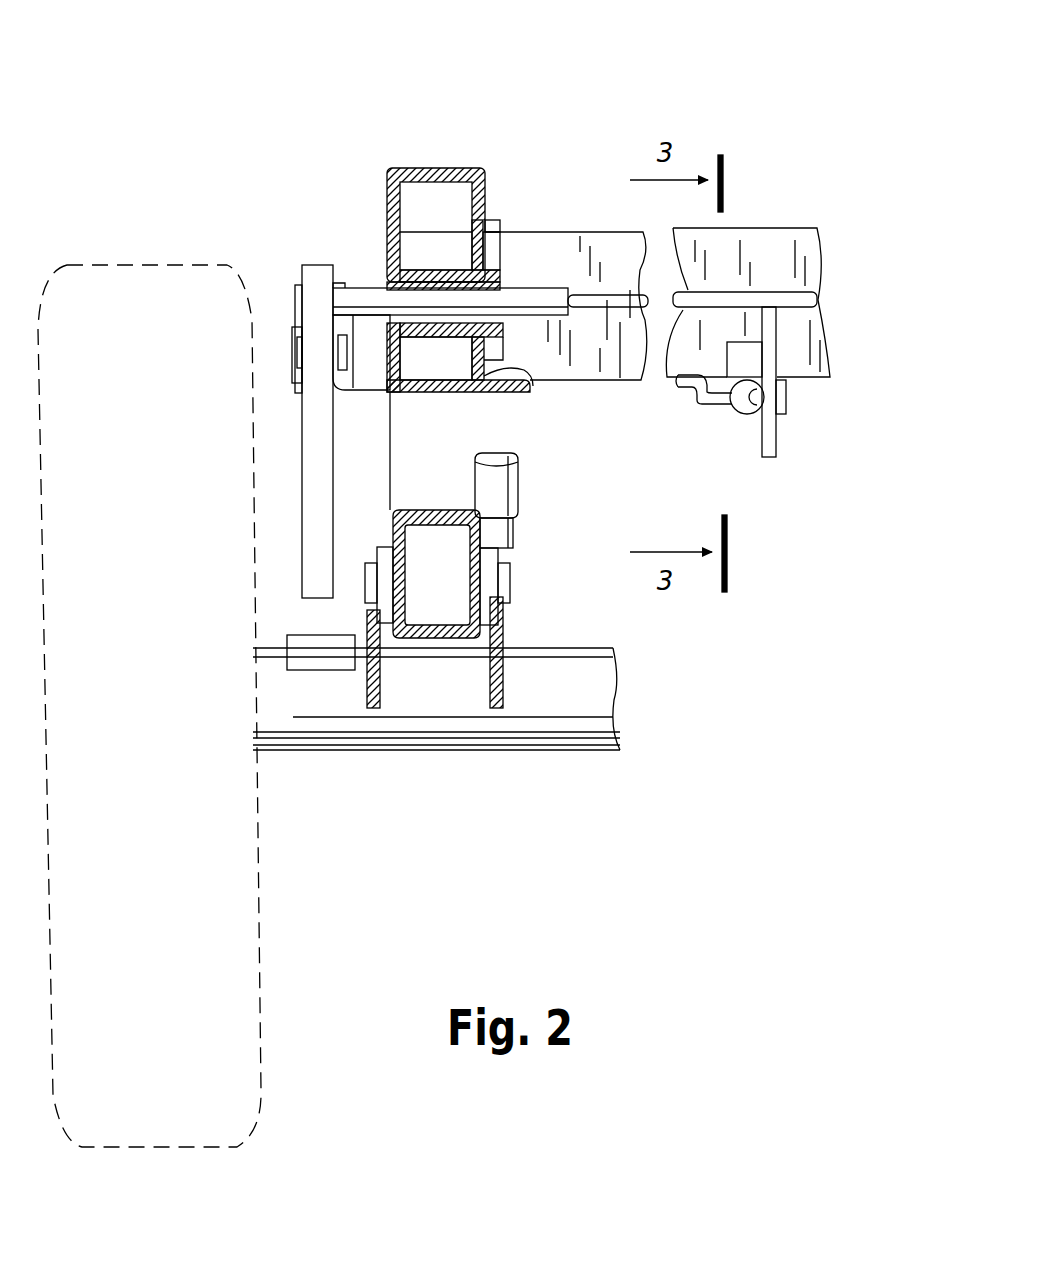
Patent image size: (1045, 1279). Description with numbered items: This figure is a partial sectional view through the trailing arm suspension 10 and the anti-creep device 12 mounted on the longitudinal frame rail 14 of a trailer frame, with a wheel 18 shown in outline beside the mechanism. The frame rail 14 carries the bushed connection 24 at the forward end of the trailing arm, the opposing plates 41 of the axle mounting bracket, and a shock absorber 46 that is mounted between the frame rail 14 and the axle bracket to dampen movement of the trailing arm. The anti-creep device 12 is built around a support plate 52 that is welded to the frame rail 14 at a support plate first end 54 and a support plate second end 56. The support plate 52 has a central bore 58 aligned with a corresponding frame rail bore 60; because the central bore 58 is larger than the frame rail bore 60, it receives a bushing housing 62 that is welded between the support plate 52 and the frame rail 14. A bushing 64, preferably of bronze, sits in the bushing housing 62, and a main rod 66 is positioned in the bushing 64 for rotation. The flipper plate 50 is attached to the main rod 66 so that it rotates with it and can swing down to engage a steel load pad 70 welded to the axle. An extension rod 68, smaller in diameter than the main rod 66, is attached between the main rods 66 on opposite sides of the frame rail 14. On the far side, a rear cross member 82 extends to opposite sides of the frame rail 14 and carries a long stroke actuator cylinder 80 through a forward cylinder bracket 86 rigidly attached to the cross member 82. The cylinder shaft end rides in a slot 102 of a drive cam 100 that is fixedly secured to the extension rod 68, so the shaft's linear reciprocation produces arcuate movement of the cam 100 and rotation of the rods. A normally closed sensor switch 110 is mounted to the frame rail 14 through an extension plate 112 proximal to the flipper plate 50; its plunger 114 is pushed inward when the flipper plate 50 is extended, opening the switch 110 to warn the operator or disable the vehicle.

The trailing arm suspension 10 is at (616, 88).
The anti-creep device 12 is at (308, 221).
The frame rail 14 is at (482, 170).
The wheels 18 is at (140, 262).
The bushed connection 24 is at (482, 588).
The opposing plates 41 is at (512, 628).
The shock absorber 46 is at (504, 492).
The flipper plate 50 is at (304, 432).
The support plate 52 is at (555, 292).
The support plate first end 54 is at (493, 232).
The support plate second end 56 is at (514, 376).
The central bore 58 is at (500, 255).
The frame rail bore 60 is at (390, 283).
The bushing housing 62 is at (506, 345).
The bushing 64 is at (428, 347).
The main rod 66 is at (584, 268).
The extension rod 68 is at (633, 300).
The load pad 70 is at (320, 660).
The actuator cylinder 80 is at (741, 415).
The rear cross member 82 is at (738, 255).
The forward cylinder bracket 86 is at (742, 347).
The drive cam 100 is at (776, 355).
The slot 102 is at (778, 435).
The sensor switch 110 is at (292, 323).
The extension plate 112 is at (373, 383).
The plunger 114 is at (296, 352).